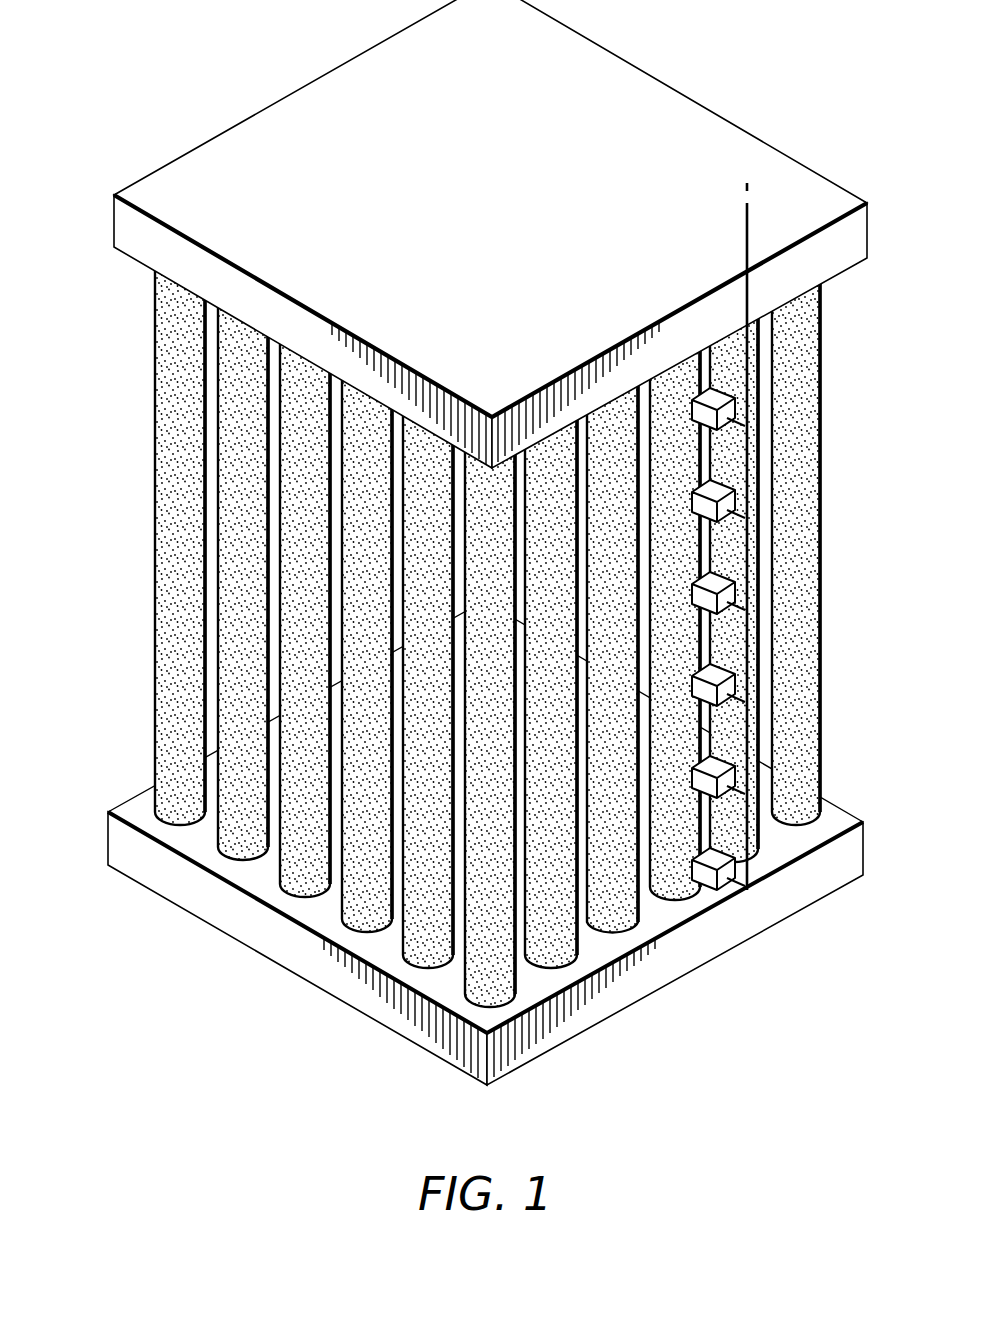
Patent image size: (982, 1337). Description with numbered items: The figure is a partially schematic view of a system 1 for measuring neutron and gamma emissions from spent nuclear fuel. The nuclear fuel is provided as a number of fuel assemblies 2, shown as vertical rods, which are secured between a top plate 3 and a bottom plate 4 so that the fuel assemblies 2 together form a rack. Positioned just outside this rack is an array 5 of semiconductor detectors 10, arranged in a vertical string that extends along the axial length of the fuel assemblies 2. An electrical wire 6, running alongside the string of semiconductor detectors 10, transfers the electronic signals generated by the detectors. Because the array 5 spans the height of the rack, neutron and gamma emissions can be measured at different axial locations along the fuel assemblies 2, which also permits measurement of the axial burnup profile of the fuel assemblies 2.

The system 1 is at (184, 134).
The fuel assembly 2 is at (157, 700).
The top plate 3 is at (117, 222).
The bottom plate 4 is at (120, 832).
The array 5 is at (738, 598).
The electrical wire 6 is at (746, 240).
The semiconductor detector 10 is at (701, 886).